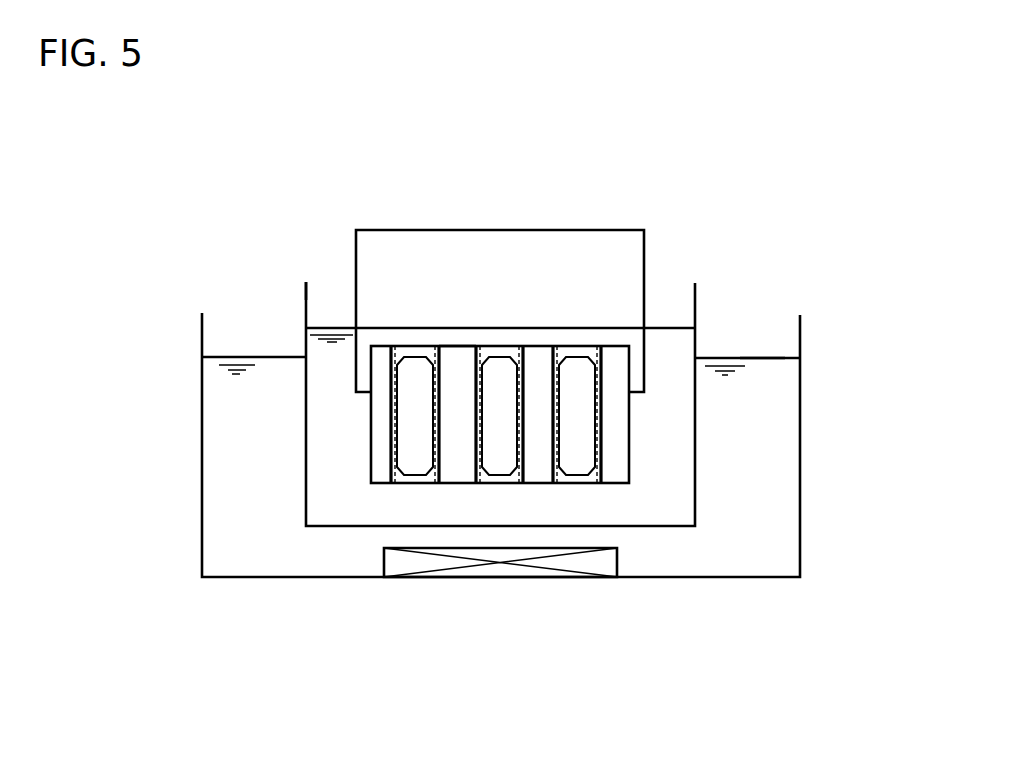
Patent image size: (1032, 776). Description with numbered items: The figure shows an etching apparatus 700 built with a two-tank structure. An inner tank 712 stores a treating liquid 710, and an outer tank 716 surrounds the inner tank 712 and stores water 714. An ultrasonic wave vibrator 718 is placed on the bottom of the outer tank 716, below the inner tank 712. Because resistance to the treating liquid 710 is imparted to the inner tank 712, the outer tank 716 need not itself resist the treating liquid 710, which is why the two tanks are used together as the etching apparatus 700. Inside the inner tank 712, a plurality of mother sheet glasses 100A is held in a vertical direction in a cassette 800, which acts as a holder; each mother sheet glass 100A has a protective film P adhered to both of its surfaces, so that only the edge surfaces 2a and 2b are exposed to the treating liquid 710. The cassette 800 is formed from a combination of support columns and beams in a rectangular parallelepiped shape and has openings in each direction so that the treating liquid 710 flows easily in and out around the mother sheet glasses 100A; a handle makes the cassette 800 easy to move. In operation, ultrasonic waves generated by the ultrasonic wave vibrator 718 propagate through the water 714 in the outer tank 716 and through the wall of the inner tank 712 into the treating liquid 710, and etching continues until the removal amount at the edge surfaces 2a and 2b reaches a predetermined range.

The etching apparatus 700 is at (617, 142).
The cassette 800 is at (605, 230).
The edge surface 2a is at (415, 357).
The edge surface 2b is at (415, 483).
The protective film P is at (478, 347).
The mother sheet glass 100A is at (566, 298).
The treating liquid 710 is at (663, 330).
The inner tank 712 is at (306, 293).
The water 714 is at (763, 358).
The outer tank 716 is at (202, 336).
The ultrasonic wave vibrator 718 is at (505, 578).